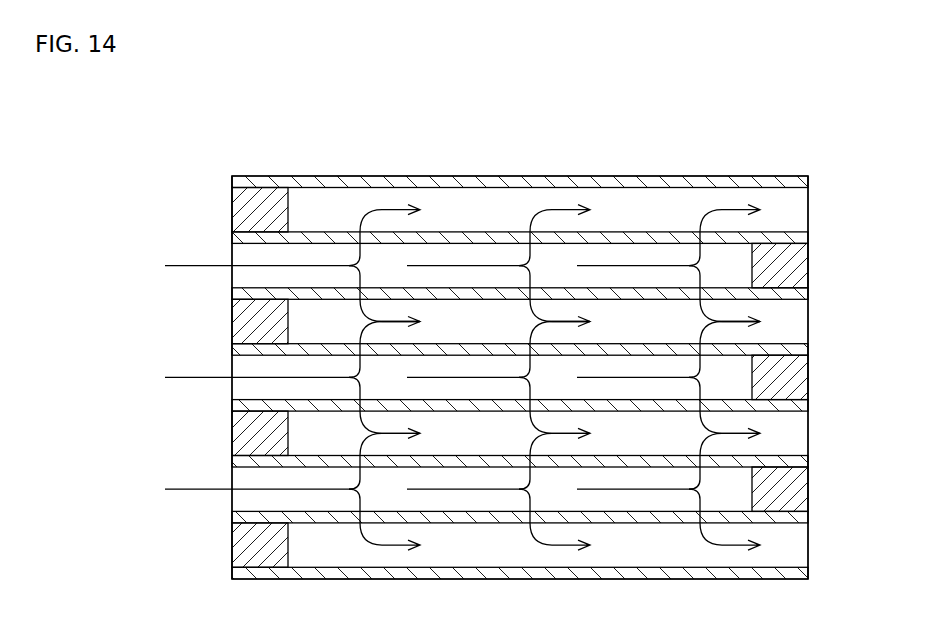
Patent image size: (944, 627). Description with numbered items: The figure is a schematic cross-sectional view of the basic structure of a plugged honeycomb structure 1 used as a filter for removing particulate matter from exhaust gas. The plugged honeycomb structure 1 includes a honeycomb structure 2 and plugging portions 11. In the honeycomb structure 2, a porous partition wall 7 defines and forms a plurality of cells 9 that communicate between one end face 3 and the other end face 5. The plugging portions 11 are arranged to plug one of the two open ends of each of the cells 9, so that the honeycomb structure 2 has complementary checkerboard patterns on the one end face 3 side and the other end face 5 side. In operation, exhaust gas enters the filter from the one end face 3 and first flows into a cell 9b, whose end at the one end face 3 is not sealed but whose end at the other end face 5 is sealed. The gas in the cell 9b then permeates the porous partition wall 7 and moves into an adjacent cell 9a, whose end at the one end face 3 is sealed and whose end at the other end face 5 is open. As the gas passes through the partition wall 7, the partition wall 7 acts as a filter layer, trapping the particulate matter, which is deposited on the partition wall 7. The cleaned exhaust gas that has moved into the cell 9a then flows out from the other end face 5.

The plugged honeycomb structure 1 is at (697, 174).
The honeycomb structure 2 is at (318, 176).
The one end face 3 is at (232, 392).
The other end face 5 is at (808, 433).
The partition wall 7 is at (613, 237).
The cells 9 is at (495, 122).
The cell 9a is at (438, 210).
The cell 9b is at (498, 257).
The plugging portions 11 is at (792, 268).